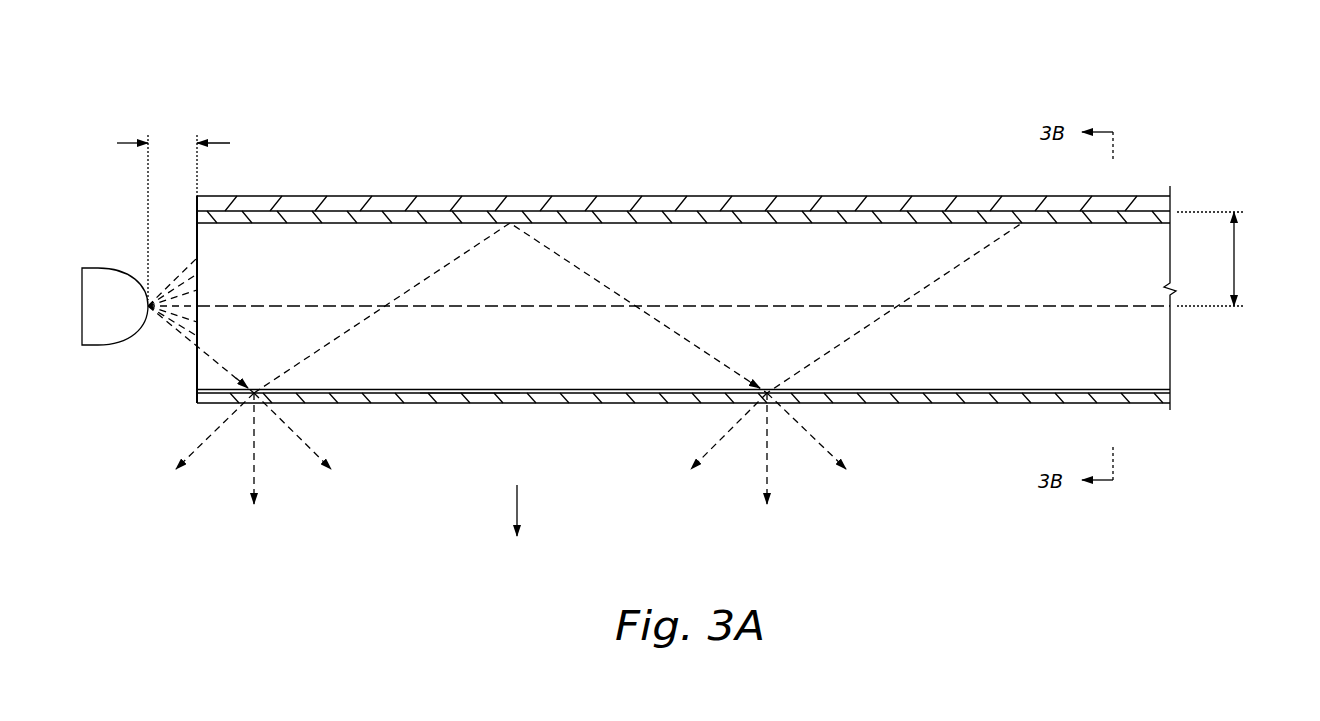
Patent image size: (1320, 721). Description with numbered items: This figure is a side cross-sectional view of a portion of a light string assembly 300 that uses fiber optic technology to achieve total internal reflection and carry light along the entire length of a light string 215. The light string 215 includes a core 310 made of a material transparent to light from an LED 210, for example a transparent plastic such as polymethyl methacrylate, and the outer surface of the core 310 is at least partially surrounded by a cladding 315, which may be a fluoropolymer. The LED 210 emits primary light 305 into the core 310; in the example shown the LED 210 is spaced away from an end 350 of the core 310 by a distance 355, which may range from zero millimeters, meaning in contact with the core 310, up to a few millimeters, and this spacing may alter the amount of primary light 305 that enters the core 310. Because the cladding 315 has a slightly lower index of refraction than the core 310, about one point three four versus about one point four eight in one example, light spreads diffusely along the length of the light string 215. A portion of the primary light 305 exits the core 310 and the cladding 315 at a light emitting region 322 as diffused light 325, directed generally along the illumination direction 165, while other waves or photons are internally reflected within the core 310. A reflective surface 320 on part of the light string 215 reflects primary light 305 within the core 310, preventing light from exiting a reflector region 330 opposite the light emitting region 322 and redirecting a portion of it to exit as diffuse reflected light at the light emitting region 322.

The light string assembly 300 is at (236, 41).
The core 310 is at (1164, 358).
The reflective surface 320 is at (618, 196).
The light emitting region 322 is at (572, 403).
The cladding 315 is at (957, 403).
The light string 215 is at (460, 365).
The end 350 is at (196, 240).
The distance 355 is at (172, 141).
The LED 210 is at (107, 268).
The primary light 305 is at (168, 336).
The diffused light 325 is at (212, 430).
The illumination direction 165 is at (516, 500).
The reflector region 330 is at (1237, 258).